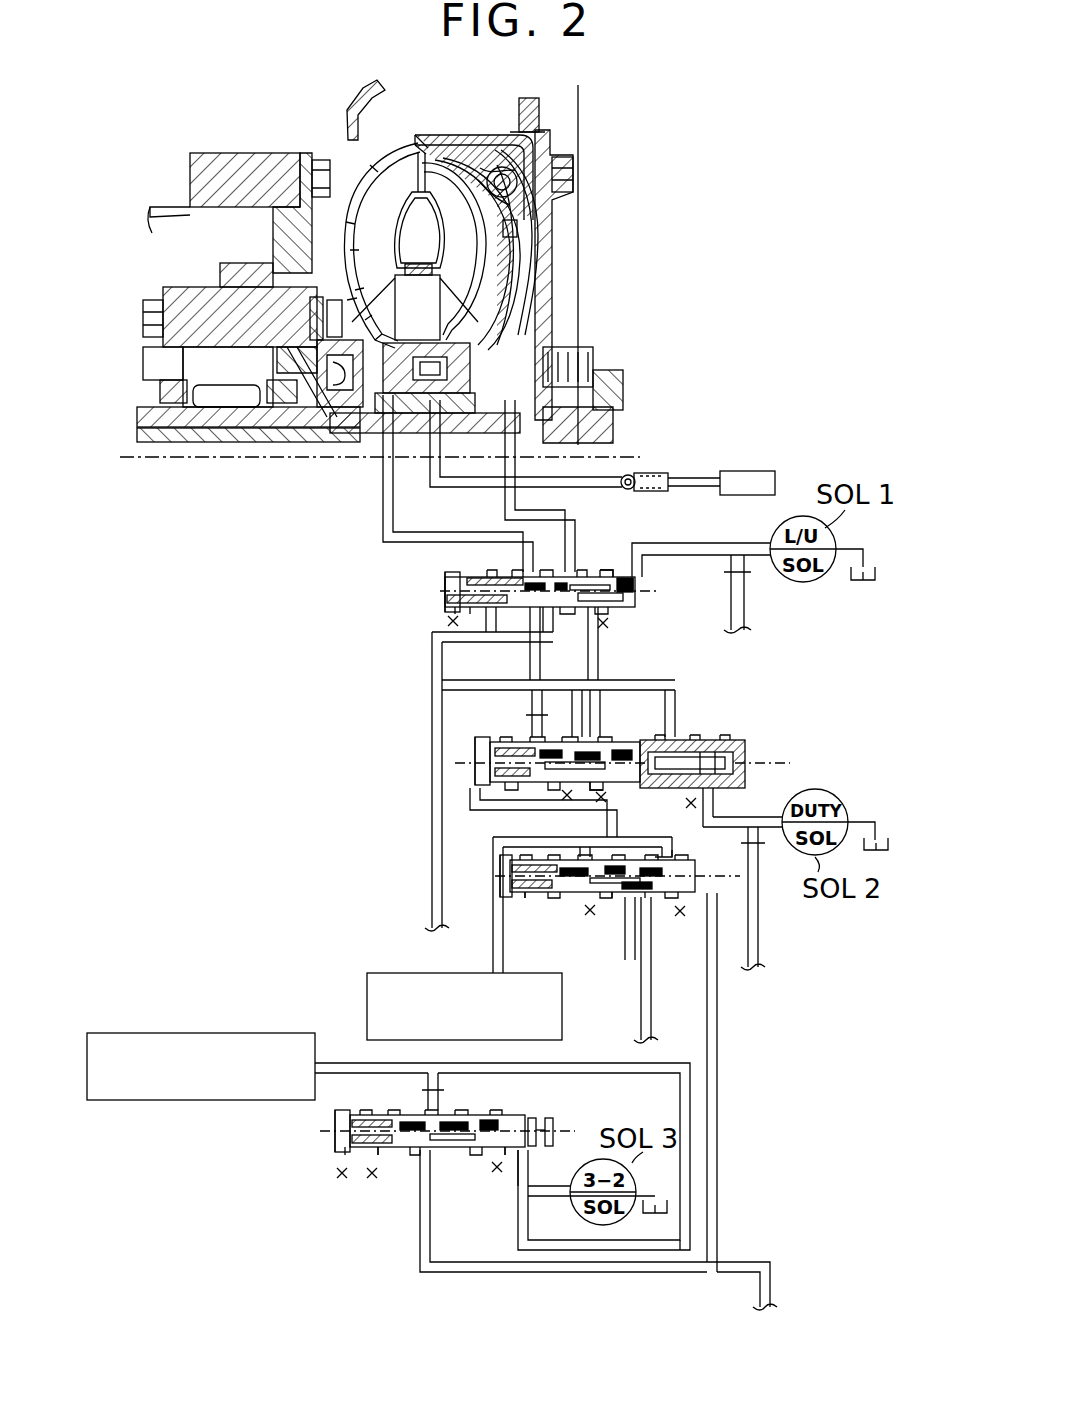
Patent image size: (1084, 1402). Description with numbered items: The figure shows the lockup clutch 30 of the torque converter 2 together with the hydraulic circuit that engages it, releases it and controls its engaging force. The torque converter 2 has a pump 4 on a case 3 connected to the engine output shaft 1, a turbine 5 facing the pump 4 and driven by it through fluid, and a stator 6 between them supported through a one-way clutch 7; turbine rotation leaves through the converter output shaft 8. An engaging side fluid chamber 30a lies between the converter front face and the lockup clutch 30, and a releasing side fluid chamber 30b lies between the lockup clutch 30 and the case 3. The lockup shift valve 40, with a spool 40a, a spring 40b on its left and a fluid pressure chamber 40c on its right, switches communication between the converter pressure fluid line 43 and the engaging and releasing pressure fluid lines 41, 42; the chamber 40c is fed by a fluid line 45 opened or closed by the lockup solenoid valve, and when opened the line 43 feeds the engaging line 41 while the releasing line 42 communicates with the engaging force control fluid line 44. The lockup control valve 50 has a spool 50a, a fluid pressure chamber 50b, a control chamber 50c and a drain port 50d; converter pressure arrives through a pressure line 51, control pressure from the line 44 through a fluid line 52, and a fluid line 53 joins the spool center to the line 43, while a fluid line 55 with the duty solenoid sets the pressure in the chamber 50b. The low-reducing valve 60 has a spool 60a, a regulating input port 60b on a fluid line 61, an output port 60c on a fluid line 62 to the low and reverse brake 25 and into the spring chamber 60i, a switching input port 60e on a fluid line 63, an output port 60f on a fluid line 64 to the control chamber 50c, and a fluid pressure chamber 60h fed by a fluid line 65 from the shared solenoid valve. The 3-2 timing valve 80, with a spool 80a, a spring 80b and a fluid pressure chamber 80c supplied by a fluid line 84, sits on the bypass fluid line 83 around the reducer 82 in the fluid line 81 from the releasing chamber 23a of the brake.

The engine output shaft 1 is at (598, 403).
The torque converter 2 is at (362, 157).
The case 3 is at (560, 212).
The pump 4 is at (368, 236).
The turbine 5 is at (423, 155).
The stator 6 is at (470, 280).
The one-way clutch 7 is at (407, 297).
The converter output shaft 8 is at (290, 455).
The releasing chamber of 2-4 brake 23a is at (205, 1030).
The low & reverse brake 25 is at (393, 973).
The lockup clutch 30 is at (548, 248).
The engaging side fluid chamber 30a is at (505, 268).
The releasing side fluid chamber 30b is at (517, 280).
The lockup shift valve 40 is at (438, 600).
The spool 40a is at (612, 568).
The spring 40b is at (447, 578).
The fluid pressure chamber 40c is at (640, 600).
The engaging pressure fluid line 41 is at (386, 497).
The releasing pressure fluid line 42 is at (507, 505).
The converter pressure fluid line 43 is at (462, 636).
The engaging force control fluid line 44 is at (600, 652).
The fluid line 45 is at (705, 555).
The lockup control valve 50 is at (465, 724).
The spool 50a is at (620, 737).
The fluid pressure chamber 50b is at (740, 765).
The control chamber 50c is at (482, 750).
The drain port 50d is at (613, 782).
The pressure line 51 is at (690, 712).
The fluid line 52 is at (532, 668).
The fluid line 53 is at (562, 712).
The fluid line 55 is at (733, 803).
The low-reducing valve 60 is at (525, 880).
The spool 60a is at (556, 915).
The input port 60b is at (645, 897).
The output port 60c is at (668, 851).
The input port 60e is at (625, 897).
The output port 60f is at (605, 857).
The fluid pressure chamber 60h is at (712, 890).
The spring chamber 60i is at (560, 893).
The fluid line 61 is at (645, 1000).
The fluid line 62 is at (540, 838).
The fluid line 63 is at (626, 947).
The fluid line 64 is at (498, 805).
The fluid line 65 is at (718, 1073).
The 3-2 timing valve 80 is at (455, 1110).
The spool 80a is at (397, 1158).
The spring 80b is at (335, 1130).
The fluid pressure chamber 80c is at (517, 1143).
The fluid line 81 is at (590, 1070).
The reducer 82 is at (680, 1213).
The bypass fluid line 83 is at (418, 1240).
The fluid line 84 is at (520, 1180).